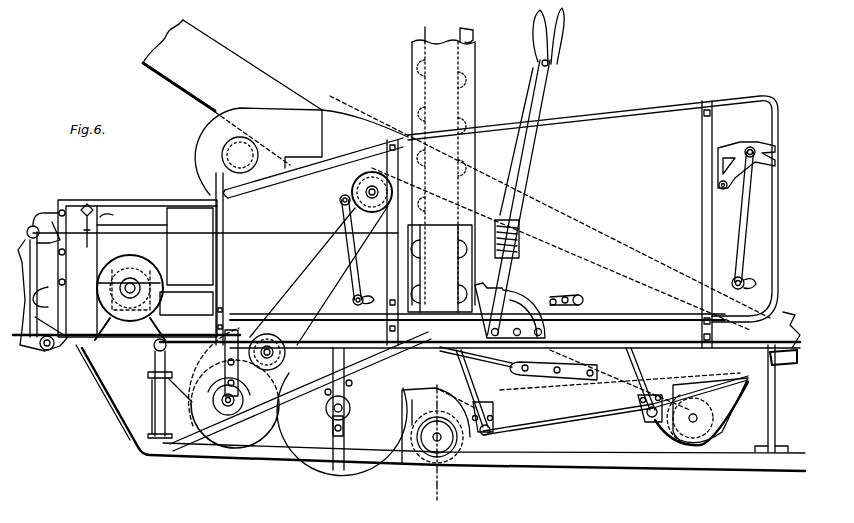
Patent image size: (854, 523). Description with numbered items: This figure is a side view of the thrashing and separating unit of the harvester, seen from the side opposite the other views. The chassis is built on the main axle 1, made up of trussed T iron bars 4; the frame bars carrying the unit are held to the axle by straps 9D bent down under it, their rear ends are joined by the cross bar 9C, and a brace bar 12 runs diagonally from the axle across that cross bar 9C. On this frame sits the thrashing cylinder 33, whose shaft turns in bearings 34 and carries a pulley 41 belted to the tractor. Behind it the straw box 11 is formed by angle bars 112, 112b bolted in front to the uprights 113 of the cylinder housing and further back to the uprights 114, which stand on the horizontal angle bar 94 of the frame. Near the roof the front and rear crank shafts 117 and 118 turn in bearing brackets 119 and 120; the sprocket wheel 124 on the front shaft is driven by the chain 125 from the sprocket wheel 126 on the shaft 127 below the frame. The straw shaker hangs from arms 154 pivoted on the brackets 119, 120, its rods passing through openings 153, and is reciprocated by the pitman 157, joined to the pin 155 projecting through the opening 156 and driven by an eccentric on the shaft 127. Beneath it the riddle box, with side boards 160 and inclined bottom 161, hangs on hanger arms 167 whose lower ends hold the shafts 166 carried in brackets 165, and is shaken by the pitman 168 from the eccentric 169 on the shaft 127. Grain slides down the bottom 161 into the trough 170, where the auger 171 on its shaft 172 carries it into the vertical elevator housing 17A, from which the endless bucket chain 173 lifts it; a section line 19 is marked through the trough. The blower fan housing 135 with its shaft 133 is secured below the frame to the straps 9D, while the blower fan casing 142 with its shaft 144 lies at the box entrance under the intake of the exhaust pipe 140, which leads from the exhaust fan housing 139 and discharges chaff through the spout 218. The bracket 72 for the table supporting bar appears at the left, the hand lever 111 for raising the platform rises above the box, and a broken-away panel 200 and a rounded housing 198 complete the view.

The main axle 1 is at (150, 394).
The T iron bars 4 is at (138, 452).
The cross bar 9C is at (775, 389).
The straps 9D is at (118, 405).
The straw box 11 is at (577, 140).
The brace bar 12 is at (559, 462).
The side casting 112b is at (40, 350).
The thrashing cylinder 33 is at (190, 246).
The bearings 34 is at (143, 276).
The pulley 41 is at (160, 300).
The bracket 72 is at (150, 358).
The rail 94 is at (584, 334).
The lever 111 is at (542, 93).
The angle bars 112 is at (612, 118).
The uprights 113 is at (224, 273).
The uprights 114 is at (702, 228).
The crank shaft 117 is at (378, 192).
The crank shaft 118 is at (342, 202).
The bearing bracket 119 is at (342, 207).
The bearing bracket 120 is at (736, 148).
The sprocket wheel 124 is at (352, 183).
The chain 125 is at (340, 206).
The sprocket wheel 126 is at (258, 340).
The shaft 127 is at (272, 345).
The shaft 133 is at (355, 416).
The housing 135 is at (355, 466).
The housing 139 is at (200, 147).
The exhaust pipe 140 is at (255, 142).
The blower fan casing 142 is at (262, 447).
The shaft 144 is at (224, 406).
The openings 153 is at (760, 283).
The arms 154 is at (730, 213).
The pin 155 is at (567, 297).
The opening 156 is at (584, 297).
The pitman 157 is at (548, 295).
The side boards 160 is at (620, 373).
The bottom 161 is at (615, 406).
The brackets 165 is at (478, 408).
The shafts 166 is at (490, 432).
The hanger arms 167 is at (512, 362).
The pitman 168 is at (538, 368).
The eccentric 169 is at (275, 372).
The trough 170 is at (452, 448).
The auger 171 is at (430, 455).
The shaft 172 is at (440, 462).
The endless bucket chain 173 is at (440, 24).
The vertical elevator housing 17A is at (412, 73).
The section line 19 is at (404, 395).
The roller housing 198 is at (722, 420).
The plate 200 is at (228, 63).
The spout 218 is at (362, 120).